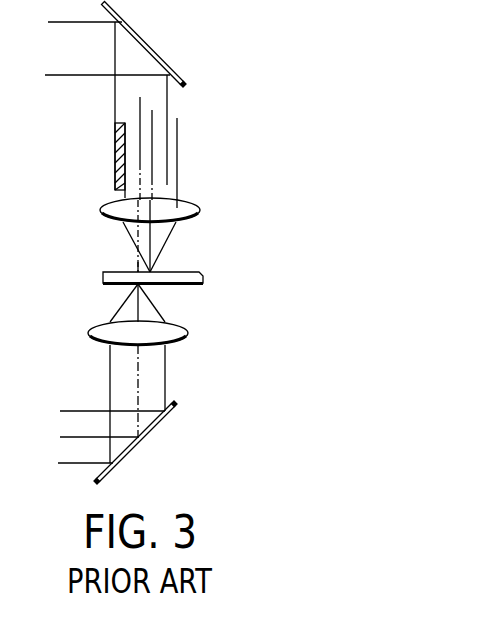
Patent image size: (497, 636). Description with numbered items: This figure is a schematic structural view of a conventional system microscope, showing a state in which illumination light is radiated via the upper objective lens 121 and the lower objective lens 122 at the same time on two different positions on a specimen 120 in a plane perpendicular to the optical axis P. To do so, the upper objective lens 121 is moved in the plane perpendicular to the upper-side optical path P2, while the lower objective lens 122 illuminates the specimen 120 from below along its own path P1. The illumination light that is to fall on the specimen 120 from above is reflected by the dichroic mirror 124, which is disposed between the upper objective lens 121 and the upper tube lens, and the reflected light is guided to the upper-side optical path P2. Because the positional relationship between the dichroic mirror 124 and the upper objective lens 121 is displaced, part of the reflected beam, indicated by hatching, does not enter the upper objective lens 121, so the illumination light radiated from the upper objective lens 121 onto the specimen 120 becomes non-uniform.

The specimen 120 is at (203, 278).
The upper objective lens 121 is at (200, 207).
The lower objective lens 122 is at (188, 332).
The dichroic mirror 124 is at (162, 57).
The optical axis P is at (138, 265).
The light beam below lens 122 P1 is at (138, 378).
The upper-side optical path P2 is at (150, 143).